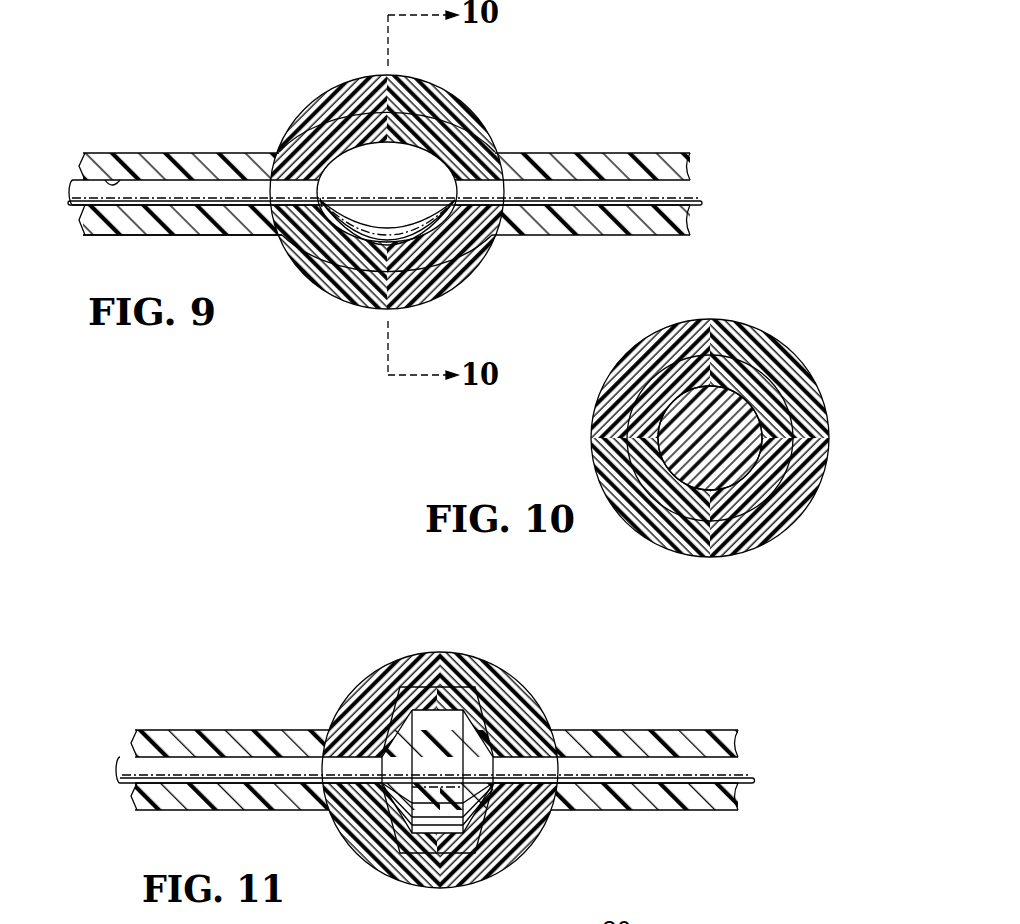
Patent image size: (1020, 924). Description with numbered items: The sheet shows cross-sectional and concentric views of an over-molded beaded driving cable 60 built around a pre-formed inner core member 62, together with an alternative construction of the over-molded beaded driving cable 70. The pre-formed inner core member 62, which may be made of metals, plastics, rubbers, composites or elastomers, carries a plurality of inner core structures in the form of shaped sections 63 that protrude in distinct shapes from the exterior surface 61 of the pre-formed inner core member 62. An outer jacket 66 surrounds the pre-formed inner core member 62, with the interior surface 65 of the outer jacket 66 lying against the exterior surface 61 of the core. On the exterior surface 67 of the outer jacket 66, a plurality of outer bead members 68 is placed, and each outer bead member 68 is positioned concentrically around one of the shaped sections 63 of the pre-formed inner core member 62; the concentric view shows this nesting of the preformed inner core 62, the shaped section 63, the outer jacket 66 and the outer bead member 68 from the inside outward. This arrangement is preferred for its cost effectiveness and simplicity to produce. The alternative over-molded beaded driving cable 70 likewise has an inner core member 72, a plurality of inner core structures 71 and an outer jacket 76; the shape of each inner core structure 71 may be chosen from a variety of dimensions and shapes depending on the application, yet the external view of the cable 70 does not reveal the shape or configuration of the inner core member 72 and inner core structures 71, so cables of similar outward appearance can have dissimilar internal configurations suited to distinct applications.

In FIG. 9, the over-molded beaded driving cable 60 is at (489, 71).
In FIG. 10, the over-molded beaded driving cable 60 is at (775, 317).
In FIG. 9, the exterior surface 61 is at (693, 176).
In FIG. 9, the pre-formed inner core member 62 is at (701, 193).
In FIG. 10, the pre-formed inner core member 62 is at (697, 480).
In FIG. 9, the shaped section 63 is at (432, 162).
In FIG. 10, the shaped section 63 is at (674, 478).
In FIG. 9, the interior surface 65 is at (106, 154).
In FIG. 9, the outer jacket 66 is at (620, 226).
In FIG. 10, the outer jacket 66 is at (770, 398).
In FIG. 9, the exterior surface 67 is at (128, 238).
In FIG. 9, the outer bead member 68 is at (338, 302).
In FIG. 10, the outer bead member 68 is at (598, 432).
In FIG. 11, the over-molded beaded driving cable 70 is at (540, 658).
In FIG. 11, the inner core structure 71 is at (408, 804).
In FIG. 11, the inner core member 72 is at (756, 771).
In FIG. 11, the outer jacket 76 is at (660, 808).